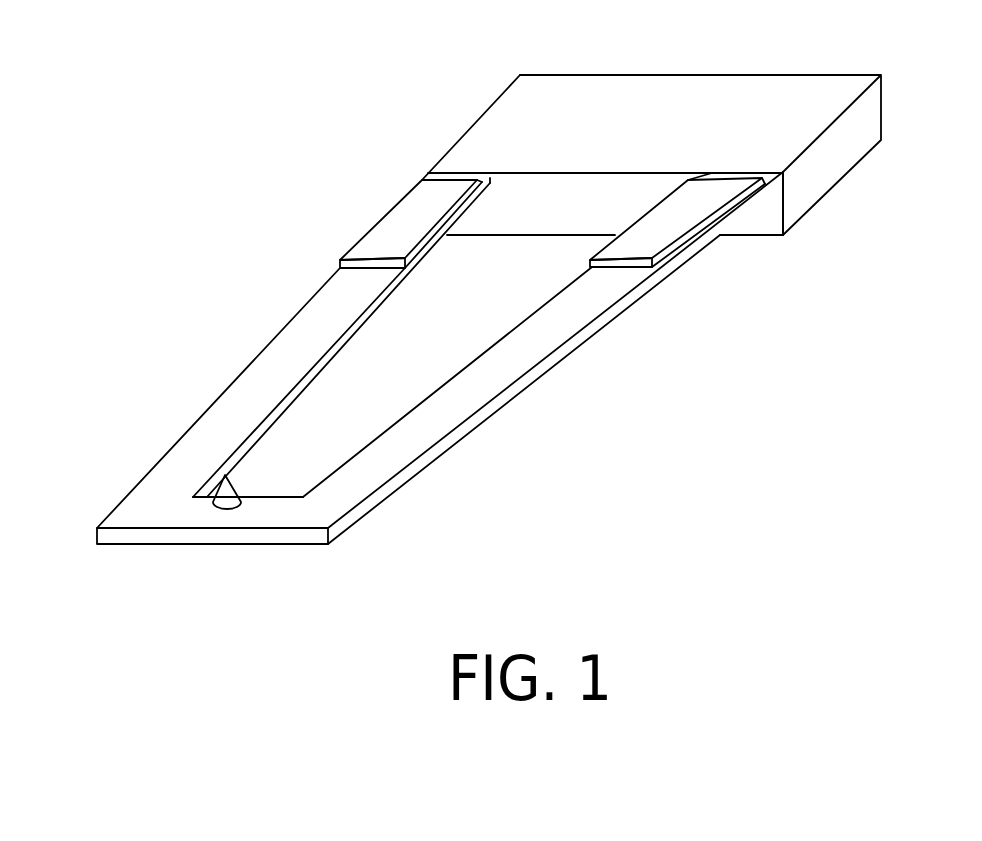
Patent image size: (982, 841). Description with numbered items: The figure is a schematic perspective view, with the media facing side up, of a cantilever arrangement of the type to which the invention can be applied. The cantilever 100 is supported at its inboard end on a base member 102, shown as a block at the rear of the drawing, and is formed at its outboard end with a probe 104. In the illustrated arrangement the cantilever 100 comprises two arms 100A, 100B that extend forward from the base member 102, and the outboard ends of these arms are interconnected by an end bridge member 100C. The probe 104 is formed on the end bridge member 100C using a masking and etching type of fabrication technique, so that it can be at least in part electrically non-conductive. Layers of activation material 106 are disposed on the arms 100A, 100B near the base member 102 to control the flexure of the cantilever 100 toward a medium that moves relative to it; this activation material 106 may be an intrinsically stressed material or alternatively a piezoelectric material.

The cantilever 100 is at (409, 403).
The arm 100A is at (198, 452).
The arm 100B is at (362, 475).
The end bridge member 100C is at (193, 538).
The base member 102 is at (727, 87).
The probe 104 is at (228, 505).
The activation material 106 is at (425, 205).